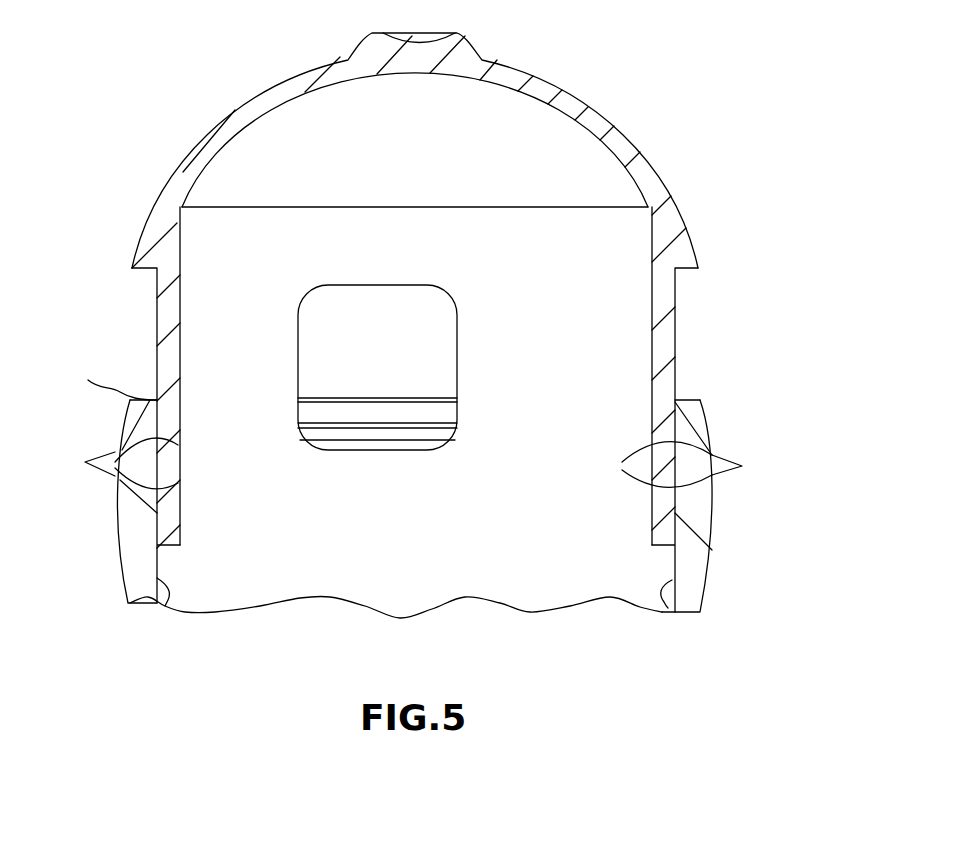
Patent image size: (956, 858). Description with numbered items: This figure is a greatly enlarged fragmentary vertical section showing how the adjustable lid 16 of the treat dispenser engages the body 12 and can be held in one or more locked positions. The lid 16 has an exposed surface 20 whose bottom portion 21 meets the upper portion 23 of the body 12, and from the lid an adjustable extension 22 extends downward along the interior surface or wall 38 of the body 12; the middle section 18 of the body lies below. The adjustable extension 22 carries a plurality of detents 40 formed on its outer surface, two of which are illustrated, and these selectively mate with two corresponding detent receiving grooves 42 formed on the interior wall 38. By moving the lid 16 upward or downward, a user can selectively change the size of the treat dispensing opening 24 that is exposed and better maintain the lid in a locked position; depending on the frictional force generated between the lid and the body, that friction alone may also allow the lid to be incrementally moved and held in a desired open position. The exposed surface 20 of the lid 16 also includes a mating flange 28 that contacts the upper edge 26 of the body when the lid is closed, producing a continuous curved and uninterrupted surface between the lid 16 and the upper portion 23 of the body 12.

The body 12 is at (447, 414).
The adjustable lid 16 is at (415, 139).
The middle section 18 is at (128, 570).
The exposed surface 20 is at (615, 130).
The bottom portion 21 is at (135, 262).
The adjustable extension 22 is at (157, 315).
The upper portion 23 is at (130, 422).
The treat dispensing opening 24 is at (410, 308).
The upper edge 26 is at (413, 375).
The mating flange 28 is at (133, 268).
The interior wall 38 is at (170, 602).
The detent 40 is at (180, 445).
The detent receiving groove 42 is at (360, 420).